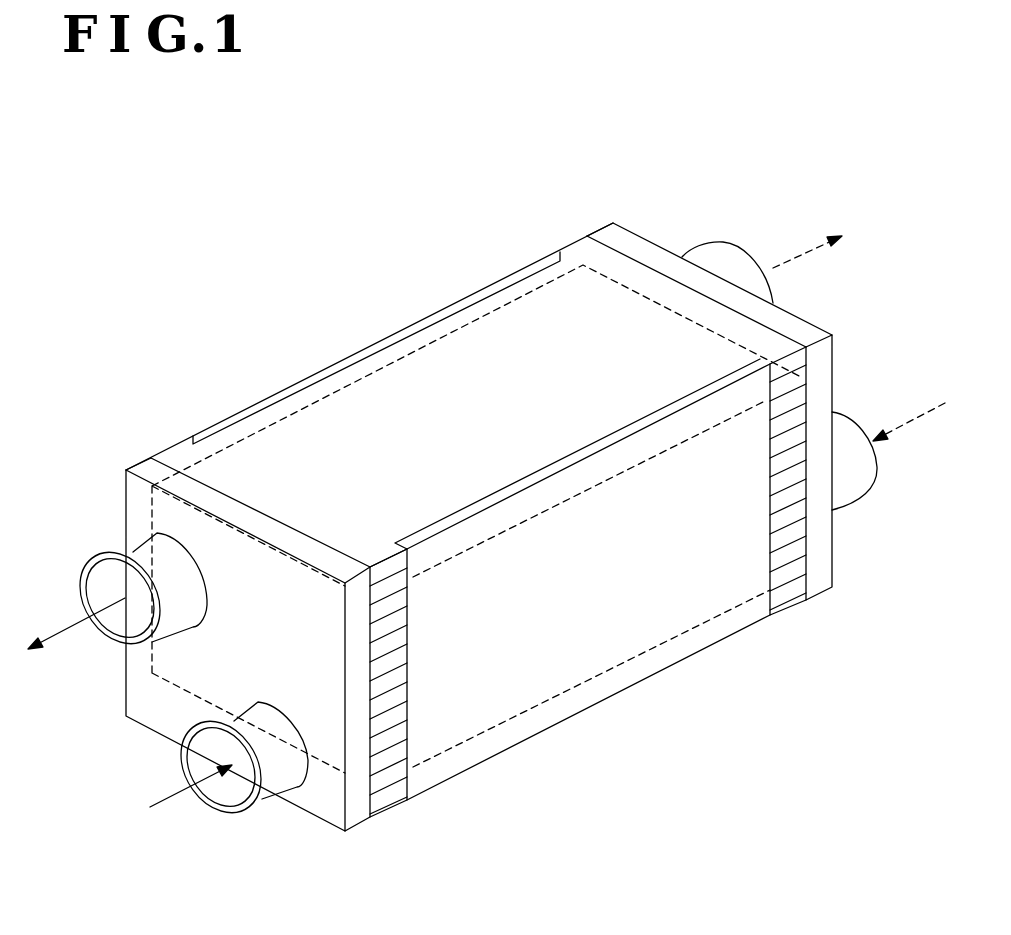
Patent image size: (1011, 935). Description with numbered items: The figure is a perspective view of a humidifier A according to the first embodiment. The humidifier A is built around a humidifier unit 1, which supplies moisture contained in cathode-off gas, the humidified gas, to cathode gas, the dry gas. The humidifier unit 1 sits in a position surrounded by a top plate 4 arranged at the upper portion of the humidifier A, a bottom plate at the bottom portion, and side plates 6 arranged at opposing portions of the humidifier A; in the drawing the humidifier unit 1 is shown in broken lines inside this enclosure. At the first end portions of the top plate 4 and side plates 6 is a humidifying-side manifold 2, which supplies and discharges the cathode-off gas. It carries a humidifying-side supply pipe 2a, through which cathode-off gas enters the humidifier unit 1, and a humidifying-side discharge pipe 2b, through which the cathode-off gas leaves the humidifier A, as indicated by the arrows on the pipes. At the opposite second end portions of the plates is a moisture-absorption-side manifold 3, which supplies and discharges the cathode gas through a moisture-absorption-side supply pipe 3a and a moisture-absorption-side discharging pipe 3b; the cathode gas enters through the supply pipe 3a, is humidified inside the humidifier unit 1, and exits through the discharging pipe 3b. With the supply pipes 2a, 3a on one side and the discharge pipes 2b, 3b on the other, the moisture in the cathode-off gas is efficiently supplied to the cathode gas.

The humidifier A is at (205, 298).
The humidifier unit 1 is at (402, 355).
The humidifying-side manifold 2 is at (128, 710).
The humidifying-side supply pipe 2a is at (267, 807).
The humidifying-side discharge pipe 2b is at (113, 540).
The moisture-absorption-side manifold 3 is at (813, 332).
The moisture-absorption-side supply pipe 3a is at (868, 478).
The moisture-absorption-side discharging pipe 3b is at (707, 255).
The top plate 4 is at (245, 452).
The side plates 6 is at (473, 293).